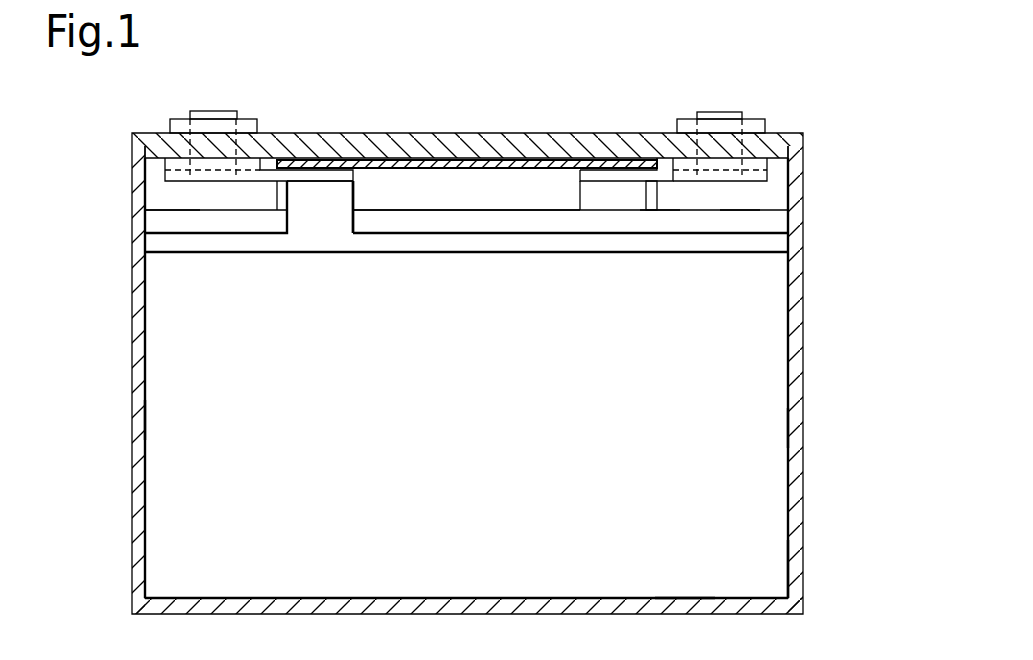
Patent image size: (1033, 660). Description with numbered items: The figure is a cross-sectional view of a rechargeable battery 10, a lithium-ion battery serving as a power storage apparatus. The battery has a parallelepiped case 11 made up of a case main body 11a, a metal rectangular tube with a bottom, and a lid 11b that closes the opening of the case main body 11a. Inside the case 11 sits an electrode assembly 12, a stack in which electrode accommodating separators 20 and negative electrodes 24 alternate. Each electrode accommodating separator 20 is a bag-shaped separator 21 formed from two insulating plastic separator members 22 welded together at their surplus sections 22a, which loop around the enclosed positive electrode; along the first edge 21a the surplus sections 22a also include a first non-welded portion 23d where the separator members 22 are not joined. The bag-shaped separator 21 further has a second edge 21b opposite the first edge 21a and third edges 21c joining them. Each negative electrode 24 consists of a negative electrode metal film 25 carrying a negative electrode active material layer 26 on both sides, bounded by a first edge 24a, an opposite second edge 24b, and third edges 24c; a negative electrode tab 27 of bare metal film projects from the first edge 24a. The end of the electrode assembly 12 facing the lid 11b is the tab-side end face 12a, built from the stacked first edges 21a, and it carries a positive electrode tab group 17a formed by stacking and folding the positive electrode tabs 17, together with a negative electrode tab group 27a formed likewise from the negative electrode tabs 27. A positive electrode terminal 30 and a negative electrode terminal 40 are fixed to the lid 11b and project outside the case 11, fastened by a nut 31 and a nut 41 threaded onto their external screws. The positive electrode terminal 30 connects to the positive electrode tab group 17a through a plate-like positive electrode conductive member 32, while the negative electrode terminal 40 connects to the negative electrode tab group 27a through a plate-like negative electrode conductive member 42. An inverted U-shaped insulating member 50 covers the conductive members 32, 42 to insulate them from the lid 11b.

The rechargeable battery 10 is at (812, 122).
The case 11 is at (413, 168).
The case main body 11a is at (132, 171).
The lid 11b is at (132, 143).
The electrode assembly 12 is at (792, 465).
The tab-side end face 12a is at (457, 208).
The positive electrode tab 17 is at (637, 194).
The positive electrode tab group 17a is at (578, 198).
The electrode accommodating separator 20 is at (778, 223).
The bag-shaped separator 21 is at (211, 208).
The first edge 21a is at (188, 208).
The second edge 21b is at (685, 603).
The third edges 21c is at (143, 410).
The separator member 22 is at (778, 216).
The surplus section 22a is at (658, 222).
The first non-welded portion 23d is at (736, 222).
The negative electrode 24 is at (466, 380).
The first edge 24a is at (270, 232).
The second edge 24b is at (263, 603).
The third edges 24c is at (146, 494).
The negative electrode metal film 25 is at (611, 244).
The negative electrode active material layer 26 is at (776, 565).
The negative electrode tab 27 is at (323, 218).
The negative electrode tab group 27a is at (357, 197).
The positive electrode terminal 30 is at (700, 111).
The nut 31 is at (755, 119).
The positive electrode conductive member 32 is at (592, 172).
The negative electrode terminal 40 is at (233, 111).
The nut 41 is at (177, 119).
The negative electrode conductive member 42 is at (328, 177).
The insulating member 50 is at (447, 160).